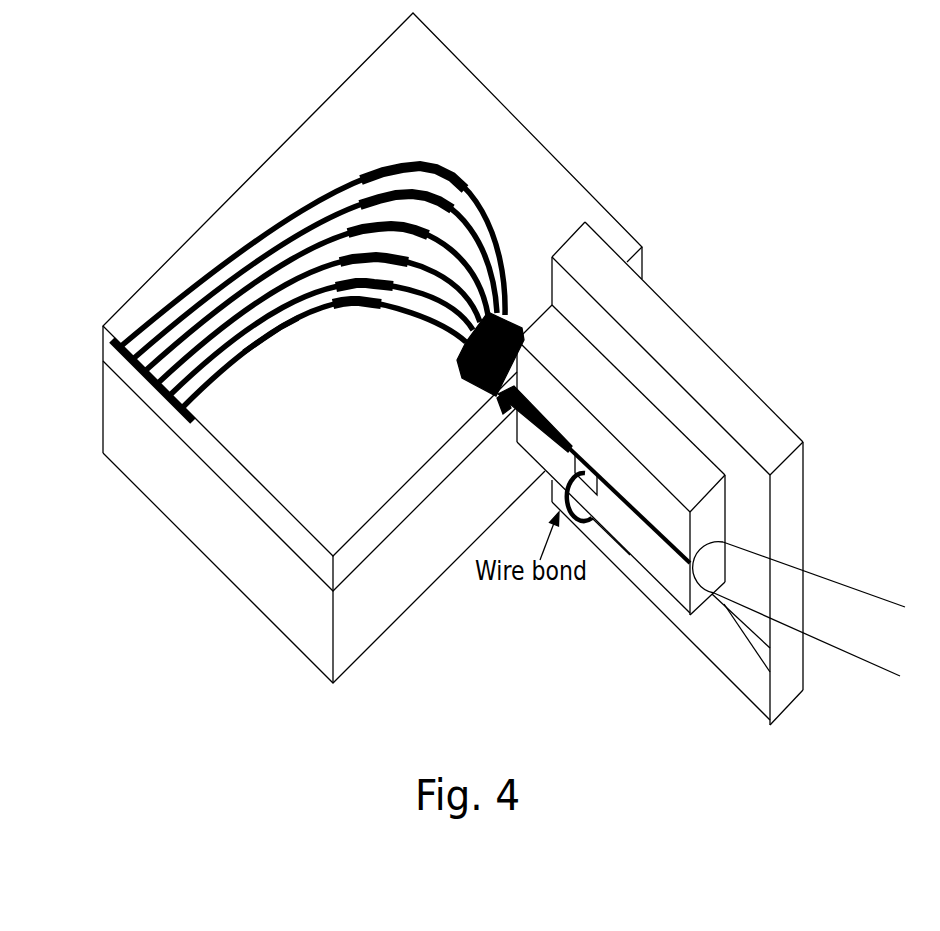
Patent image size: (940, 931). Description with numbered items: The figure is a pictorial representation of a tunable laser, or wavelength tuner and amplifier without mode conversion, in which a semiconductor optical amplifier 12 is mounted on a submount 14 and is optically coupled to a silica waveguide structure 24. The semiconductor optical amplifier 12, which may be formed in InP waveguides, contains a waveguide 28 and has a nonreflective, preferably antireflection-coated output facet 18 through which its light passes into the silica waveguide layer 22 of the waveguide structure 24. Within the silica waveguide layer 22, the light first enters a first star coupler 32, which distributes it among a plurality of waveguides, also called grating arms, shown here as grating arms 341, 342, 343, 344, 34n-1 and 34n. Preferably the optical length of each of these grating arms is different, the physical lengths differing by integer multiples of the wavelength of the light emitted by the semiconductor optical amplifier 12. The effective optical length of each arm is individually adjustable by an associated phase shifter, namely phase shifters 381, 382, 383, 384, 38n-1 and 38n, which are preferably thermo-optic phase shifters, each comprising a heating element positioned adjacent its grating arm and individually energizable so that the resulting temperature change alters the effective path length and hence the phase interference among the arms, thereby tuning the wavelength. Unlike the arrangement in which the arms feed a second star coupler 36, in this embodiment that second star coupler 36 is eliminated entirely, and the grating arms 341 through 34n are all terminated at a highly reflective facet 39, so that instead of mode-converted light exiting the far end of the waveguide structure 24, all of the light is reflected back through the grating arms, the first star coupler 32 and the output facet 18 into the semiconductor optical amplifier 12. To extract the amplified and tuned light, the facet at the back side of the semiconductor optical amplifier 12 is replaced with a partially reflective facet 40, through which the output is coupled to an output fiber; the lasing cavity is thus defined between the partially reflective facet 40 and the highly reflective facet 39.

The semiconductor optical amplifier 12 is at (623, 548).
The submount 14 is at (764, 386).
The output facet 18 is at (539, 384).
The silica waveguide layer 22 is at (370, 552).
The waveguide structure 24 is at (360, 659).
The waveguide 28 is at (659, 552).
The first star coupler 32 is at (459, 386).
The grating arm 34n is at (293, 190).
The grating arm 34n-1 is at (340, 191).
The grating arm 344 is at (309, 239).
The grating arm 343 is at (290, 274).
The grating arm 342 is at (467, 293).
The grating arm 341 is at (311, 309).
The second star coupler 36 is at (278, 345).
The phase shifter 38n is at (416, 144).
The phase shifter 38n-1 is at (463, 201).
The phase shifter 384 is at (412, 204).
The phase shifter 383 is at (403, 286).
The phase shifter 382 is at (363, 292).
The phase shifter 381 is at (385, 337).
The highly reflective facet 39 is at (140, 393).
The partially reflective facet 40 is at (688, 603).